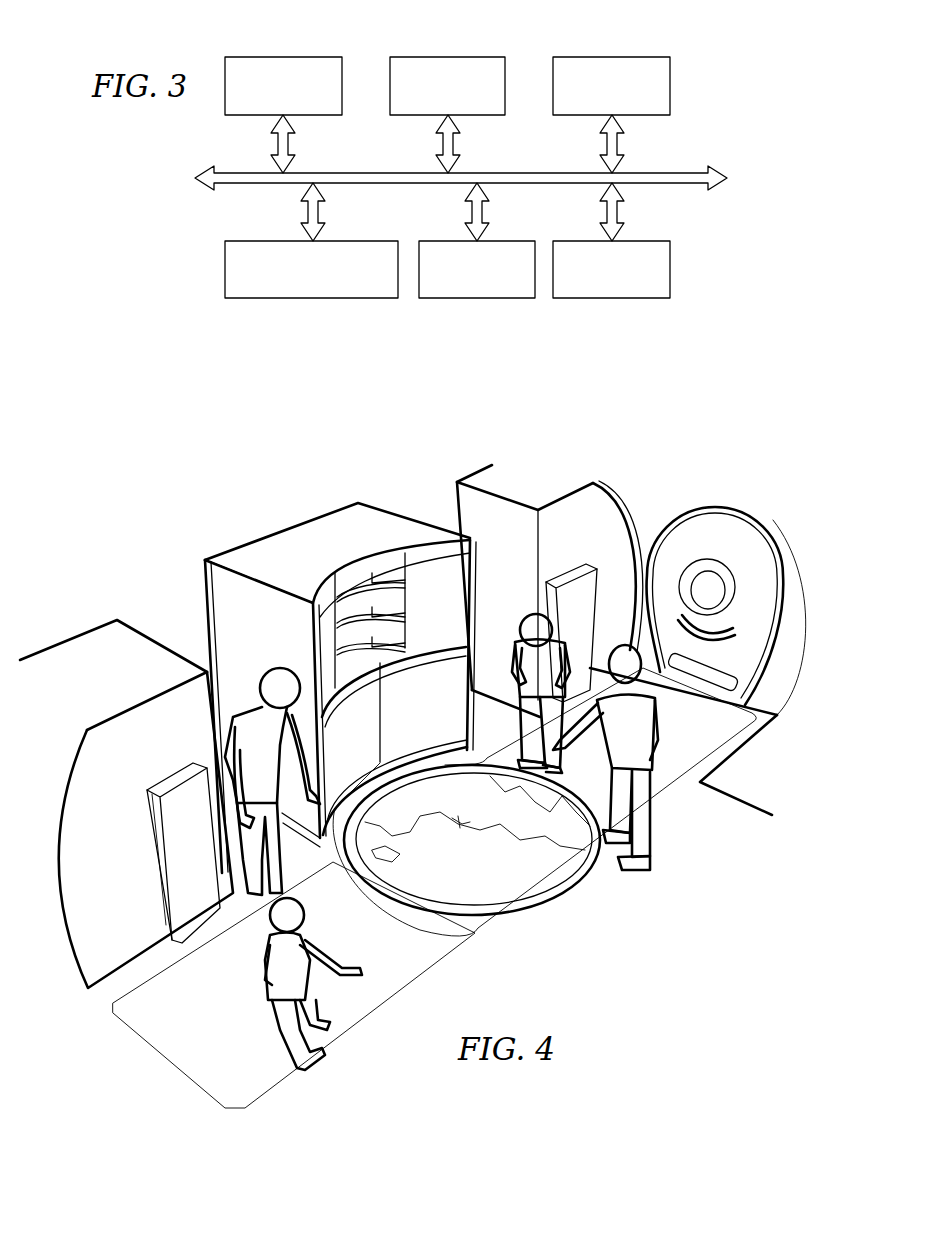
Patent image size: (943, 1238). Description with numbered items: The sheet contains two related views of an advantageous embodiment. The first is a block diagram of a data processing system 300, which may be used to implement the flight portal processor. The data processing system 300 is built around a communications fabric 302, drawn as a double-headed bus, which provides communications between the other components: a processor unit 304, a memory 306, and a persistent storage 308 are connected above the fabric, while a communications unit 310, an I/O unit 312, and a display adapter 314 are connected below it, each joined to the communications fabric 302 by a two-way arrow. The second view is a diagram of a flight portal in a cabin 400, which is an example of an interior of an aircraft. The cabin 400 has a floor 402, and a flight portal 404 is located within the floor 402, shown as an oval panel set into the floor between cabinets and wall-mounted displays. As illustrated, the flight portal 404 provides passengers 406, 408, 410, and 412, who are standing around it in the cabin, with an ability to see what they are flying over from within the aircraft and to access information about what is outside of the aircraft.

In FIG. 3, the data processing system 300 is at (181, 231).
In FIG. 3, the communications fabric 302 is at (688, 173).
In FIG. 3, the processor unit 304 is at (265, 57).
In FIG. 3, the memory 306 is at (428, 57).
In FIG. 3, the persistent storage 308 is at (630, 57).
In FIG. 3, the communications unit 310 is at (296, 298).
In FIG. 3, the I/O unit 312 is at (496, 298).
In FIG. 3, the display adapter 314 is at (630, 298).
In FIG. 4, the cabin 400 is at (165, 542).
In FIG. 4, the floor 402 is at (516, 970).
In FIG. 4, the flight portal 404 is at (498, 881).
In FIG. 4, the passenger 406 is at (264, 984).
In FIG. 4, the passenger 408 is at (272, 669).
In FIG. 4, the passenger 410 is at (522, 616).
In FIG. 4, the passenger 412 is at (658, 740).